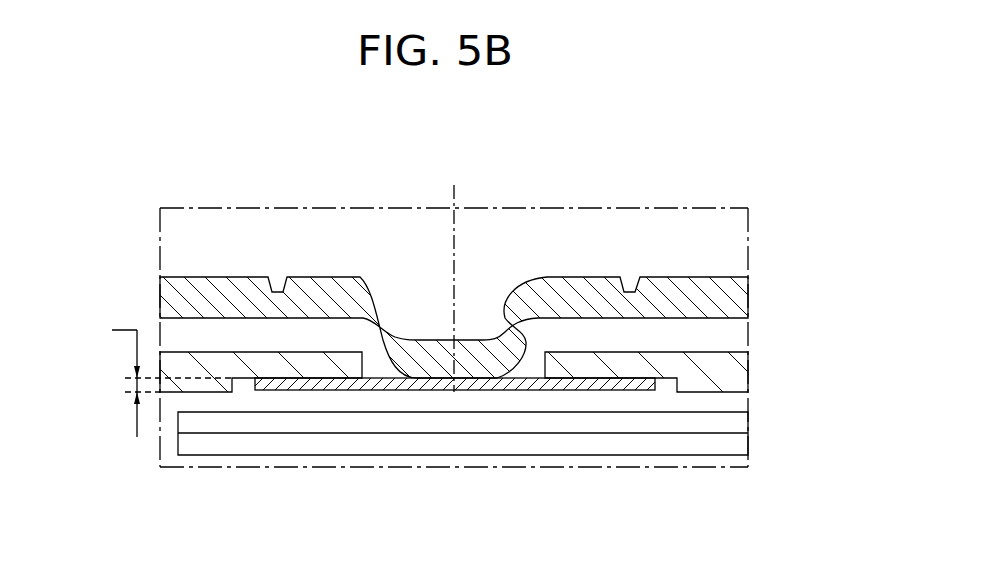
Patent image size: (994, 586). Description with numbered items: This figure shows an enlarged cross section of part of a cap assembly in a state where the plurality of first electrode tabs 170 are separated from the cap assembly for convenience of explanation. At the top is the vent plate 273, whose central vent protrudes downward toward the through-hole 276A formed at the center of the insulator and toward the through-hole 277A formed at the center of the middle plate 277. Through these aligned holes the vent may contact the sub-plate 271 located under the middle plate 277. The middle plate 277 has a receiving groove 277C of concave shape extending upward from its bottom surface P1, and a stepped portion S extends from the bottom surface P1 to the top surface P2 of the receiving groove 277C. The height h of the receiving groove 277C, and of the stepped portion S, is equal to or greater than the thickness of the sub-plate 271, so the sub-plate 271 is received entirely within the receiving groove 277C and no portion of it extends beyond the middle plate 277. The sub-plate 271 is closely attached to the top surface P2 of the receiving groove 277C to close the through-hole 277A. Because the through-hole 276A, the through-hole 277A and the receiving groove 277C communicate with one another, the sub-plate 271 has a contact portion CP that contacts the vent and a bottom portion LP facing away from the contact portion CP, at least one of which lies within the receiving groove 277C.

The vent plate 273 is at (735, 298).
The middle plate 277 is at (733, 377).
The sub-plate 271 is at (330, 392).
The first electrode tabs 170 is at (428, 423).
The through-hole of the insulator 276A is at (204, 326).
The through-hole of the middle plate 277A is at (376, 363).
The receiving groove 277C is at (670, 375).
The contact portion CP is at (456, 378).
The bottom portion LP is at (458, 395).
The stepped portion S is at (238, 390).
The top surface of the receiving groove P2 is at (125, 378).
The bottom surface of the middle plate P1 is at (125, 391).
The height of the receiving groove h is at (126, 369).